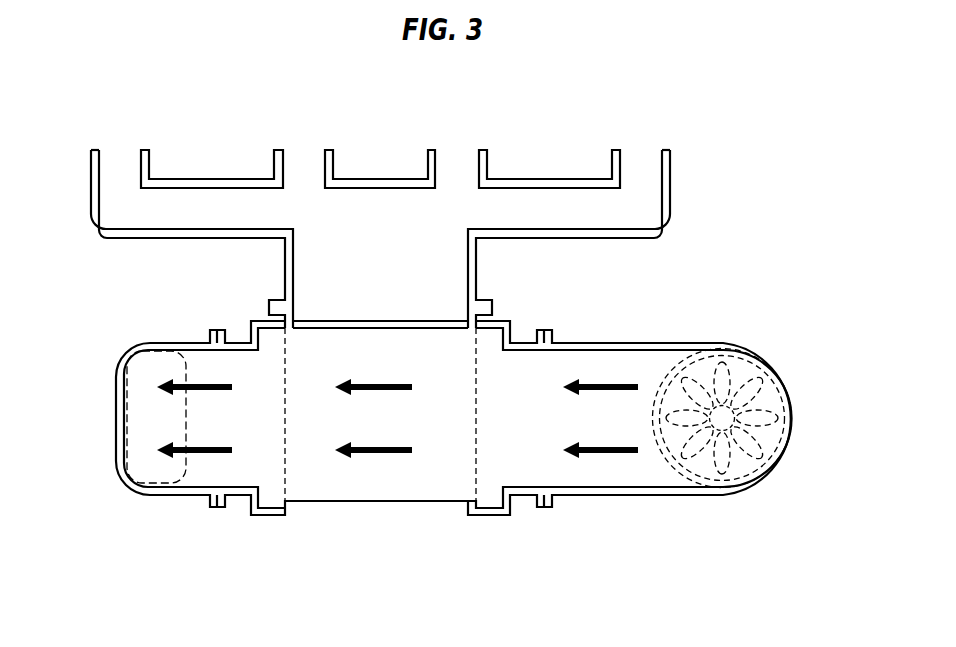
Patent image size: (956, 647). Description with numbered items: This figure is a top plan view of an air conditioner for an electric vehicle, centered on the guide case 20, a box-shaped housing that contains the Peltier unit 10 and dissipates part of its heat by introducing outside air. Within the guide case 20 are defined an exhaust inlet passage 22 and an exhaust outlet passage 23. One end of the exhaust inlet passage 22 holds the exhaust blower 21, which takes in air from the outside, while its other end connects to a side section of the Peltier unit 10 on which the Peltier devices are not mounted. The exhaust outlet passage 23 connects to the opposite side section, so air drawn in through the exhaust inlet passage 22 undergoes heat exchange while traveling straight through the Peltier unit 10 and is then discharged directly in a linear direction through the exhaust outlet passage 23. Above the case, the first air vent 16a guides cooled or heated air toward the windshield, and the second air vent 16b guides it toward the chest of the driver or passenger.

The Peltier unit 10 is at (283, 455).
The first air vent 16a is at (307, 158).
The second air vent 16b is at (123, 158).
The guide case 20 is at (387, 503).
The exhaust blower 21 is at (722, 465).
The exhaust inlet passage 22 is at (595, 473).
The exhaust outlet passage 23 is at (193, 477).